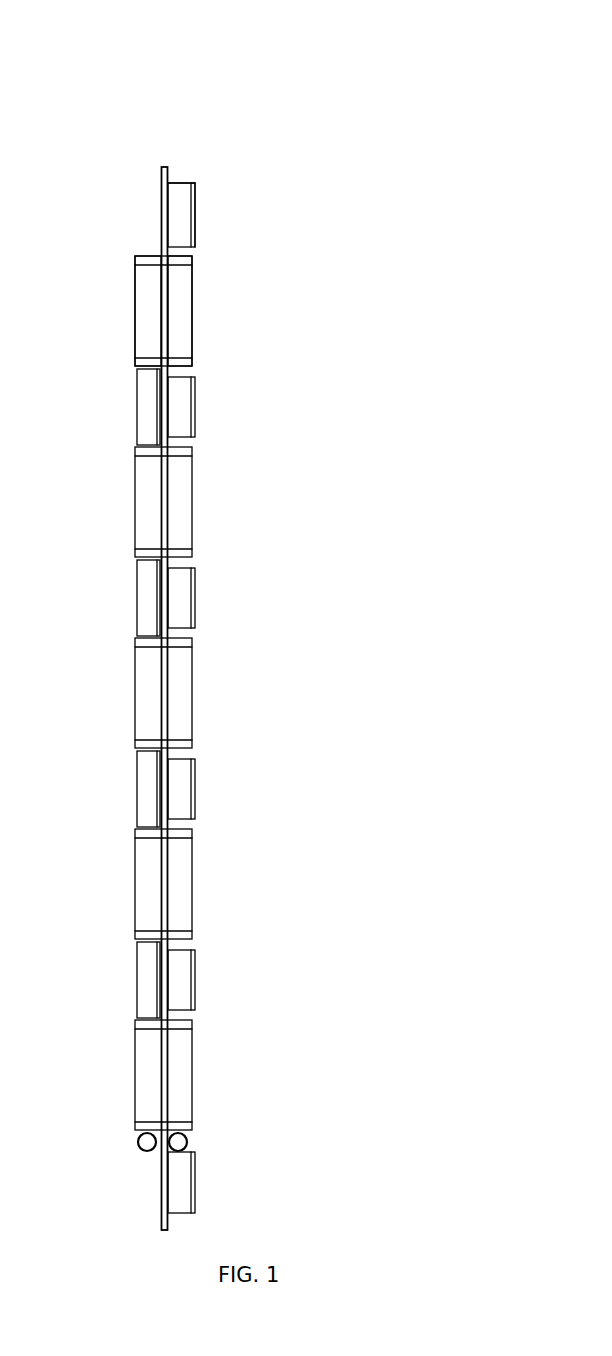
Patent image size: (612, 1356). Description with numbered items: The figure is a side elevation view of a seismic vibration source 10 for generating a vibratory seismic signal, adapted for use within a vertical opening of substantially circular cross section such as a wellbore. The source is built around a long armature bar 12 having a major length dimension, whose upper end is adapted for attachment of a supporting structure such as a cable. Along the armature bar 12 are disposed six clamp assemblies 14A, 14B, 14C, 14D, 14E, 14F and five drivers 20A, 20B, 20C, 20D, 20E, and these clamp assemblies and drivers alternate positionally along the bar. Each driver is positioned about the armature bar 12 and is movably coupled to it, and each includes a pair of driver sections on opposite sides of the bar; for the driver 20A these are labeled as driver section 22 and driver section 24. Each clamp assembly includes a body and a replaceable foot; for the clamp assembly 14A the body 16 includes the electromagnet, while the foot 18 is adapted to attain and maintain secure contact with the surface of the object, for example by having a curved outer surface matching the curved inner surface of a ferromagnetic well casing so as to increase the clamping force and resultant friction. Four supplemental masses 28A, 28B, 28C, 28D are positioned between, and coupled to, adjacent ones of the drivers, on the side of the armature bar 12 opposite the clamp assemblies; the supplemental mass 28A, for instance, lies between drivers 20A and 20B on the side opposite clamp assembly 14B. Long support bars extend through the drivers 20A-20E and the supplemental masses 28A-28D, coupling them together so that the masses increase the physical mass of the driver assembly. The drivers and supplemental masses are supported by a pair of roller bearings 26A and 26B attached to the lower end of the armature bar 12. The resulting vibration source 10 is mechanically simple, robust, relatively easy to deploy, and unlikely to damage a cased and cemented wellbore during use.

The seismic vibration source 10 is at (213, 619).
The armature bar 12 is at (165, 202).
The clamp assembly 14A is at (275, 183).
The clamp assembly 14B is at (195, 406).
The clamp assembly 14C is at (195, 597).
The clamp assembly 14D is at (195, 788).
The clamp assembly 14E is at (195, 977).
The clamp assembly 14F is at (195, 1182).
The body 16 is at (181, 183).
The replaceable foot 18 is at (195, 212).
The driver 20A is at (222, 302).
The driver 20B is at (192, 503).
The driver 20C is at (192, 694).
The driver 20D is at (192, 885).
The driver 20E is at (192, 1076).
The driver section 22 is at (135, 313).
The driver section 24 is at (192, 311).
The roller bearing 26A is at (138, 1141).
The roller bearing 26B is at (188, 1141).
The supplemental mass 28A is at (137, 410).
The supplemental mass 28B is at (137, 601).
The supplemental mass 28C is at (137, 792).
The supplemental mass 28D is at (137, 983).